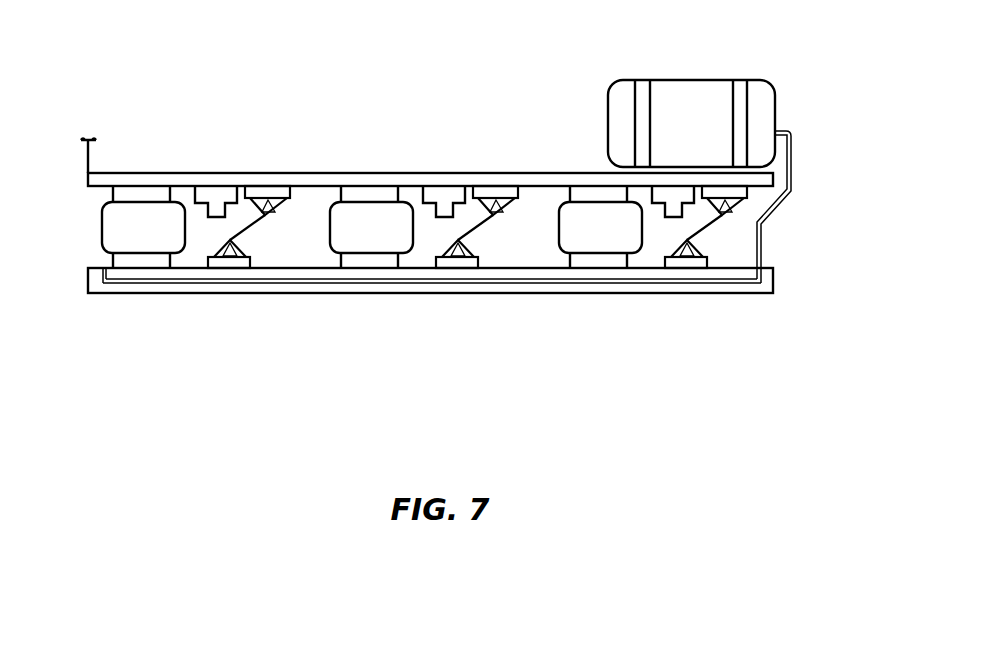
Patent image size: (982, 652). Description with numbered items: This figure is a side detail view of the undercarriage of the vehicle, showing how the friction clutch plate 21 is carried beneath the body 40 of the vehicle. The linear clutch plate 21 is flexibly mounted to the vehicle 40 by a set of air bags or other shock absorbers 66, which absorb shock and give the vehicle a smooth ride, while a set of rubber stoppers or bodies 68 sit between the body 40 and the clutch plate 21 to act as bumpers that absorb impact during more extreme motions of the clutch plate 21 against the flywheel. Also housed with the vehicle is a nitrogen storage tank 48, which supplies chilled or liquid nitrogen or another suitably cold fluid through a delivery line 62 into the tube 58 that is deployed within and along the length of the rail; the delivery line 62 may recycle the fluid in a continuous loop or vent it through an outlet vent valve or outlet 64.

The body of the vehicle 40 is at (320, 138).
The nitrogen tank 48 is at (690, 80).
The delivery line 62 is at (796, 172).
The outlet vent valve 64 is at (103, 266).
The air bags or shock absorbers 66 is at (143, 245).
The rubber stoppers 68 is at (215, 197).
The tube 58 is at (243, 283).
The friction clutch plate 21 is at (487, 293).